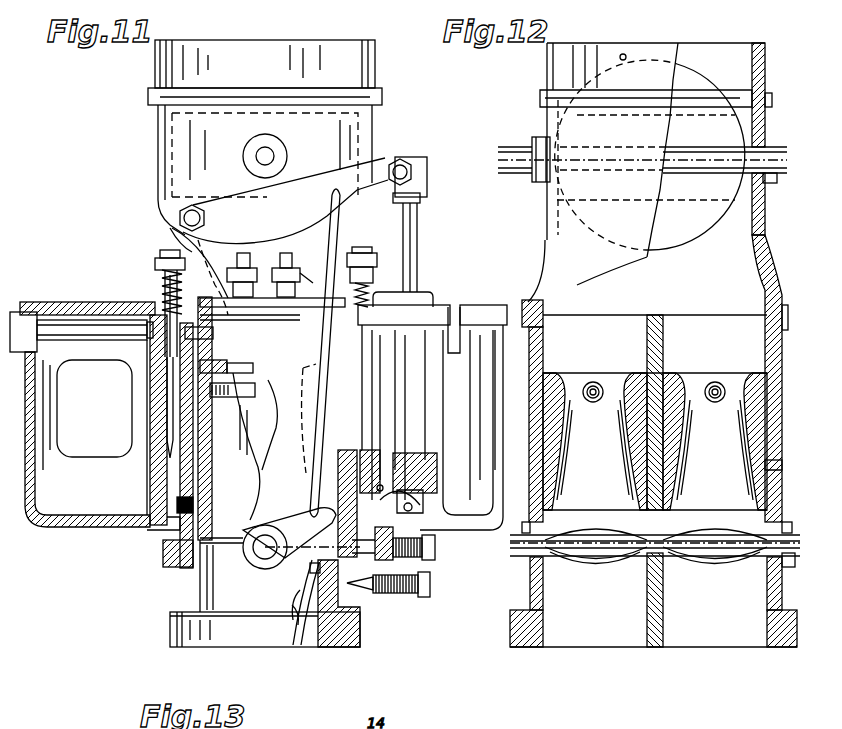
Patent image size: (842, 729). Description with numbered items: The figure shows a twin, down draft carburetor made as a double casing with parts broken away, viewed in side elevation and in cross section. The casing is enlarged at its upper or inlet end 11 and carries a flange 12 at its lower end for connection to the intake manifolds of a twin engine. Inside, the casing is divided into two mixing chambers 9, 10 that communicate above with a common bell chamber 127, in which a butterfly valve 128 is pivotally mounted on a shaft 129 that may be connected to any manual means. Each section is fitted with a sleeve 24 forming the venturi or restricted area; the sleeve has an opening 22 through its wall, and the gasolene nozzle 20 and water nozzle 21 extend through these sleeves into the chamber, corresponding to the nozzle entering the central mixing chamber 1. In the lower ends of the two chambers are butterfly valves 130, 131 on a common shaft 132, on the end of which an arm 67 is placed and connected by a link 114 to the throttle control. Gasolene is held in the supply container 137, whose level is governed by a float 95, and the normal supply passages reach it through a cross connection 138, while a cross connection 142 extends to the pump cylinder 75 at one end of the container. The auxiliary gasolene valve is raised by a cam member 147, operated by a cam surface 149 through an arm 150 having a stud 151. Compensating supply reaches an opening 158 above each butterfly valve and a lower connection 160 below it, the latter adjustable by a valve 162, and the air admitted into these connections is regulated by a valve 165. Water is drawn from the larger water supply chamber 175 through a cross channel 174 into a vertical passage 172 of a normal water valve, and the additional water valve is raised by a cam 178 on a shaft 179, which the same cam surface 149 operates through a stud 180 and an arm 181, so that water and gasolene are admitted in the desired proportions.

In FIG. 11, the mixing chamber 1 is at (307, 637).
In FIG. 11, the mixing chamber 9 is at (258, 462).
In FIG. 12, the mixing chamber 9 is at (595, 450).
In FIG. 12, the mixing chamber 10 is at (715, 450).
In FIG. 11, the enlarged upper or inlet end 11 is at (158, 160).
In FIG. 12, the enlarged upper or inlet end 11 is at (760, 262).
In FIG. 11, the flange 12 is at (170, 623).
In FIG. 12, the flange 12 is at (518, 632).
In FIG. 11, the gasolene nozzle 20 is at (278, 418).
In FIG. 11, the water nozzle 21 is at (256, 455).
In FIG. 12, the water nozzle 21 is at (598, 385).
In FIG. 11, the opening 22 is at (226, 376).
In FIG. 11, the sleeve 24 is at (277, 373).
In FIG. 12, the sleeve 24 is at (553, 383).
In FIG. 11, the arm 67 is at (295, 518).
In FIG. 11, the pump cylinder 75 is at (418, 350).
In FIG. 11, the float 95 is at (94, 408).
In FIG. 11, the link 114 is at (311, 476).
In FIG. 12, the bell chamber 127 is at (650, 273).
In FIG. 12, the butterfly valve 128 is at (693, 240).
In FIG. 11, the shaft 129 is at (271, 152).
In FIG. 12, the shaft 129 is at (508, 172).
In FIG. 12, the butterfly valve 130 is at (595, 565).
In FIG. 12, the butterfly valve 131 is at (725, 565).
In FIG. 11, the common shaft 132 is at (259, 564).
In FIG. 12, the common shaft 132 is at (513, 557).
In FIG. 11, the gasolene supply container 137 is at (470, 355).
In FIG. 11, the cross connection 138 is at (420, 505).
In FIG. 11, the cross connection 142 is at (390, 460).
In FIG. 11, the cam member 147 is at (382, 285).
In FIG. 11, the cam surface 149 is at (265, 237).
In FIG. 11, the arm 150 is at (312, 285).
In FIG. 11, the stud 151 is at (291, 262).
In FIG. 11, the opening 158 is at (297, 590).
In FIG. 11, the lower connection 160 is at (293, 612).
In FIG. 11, the valve 162 is at (421, 594).
In FIG. 11, the valve 165 is at (434, 559).
In FIG. 11, the vertical passage 172 is at (147, 458).
In FIG. 11, the cross channel 174 is at (165, 507).
In FIG. 11, the water supply chamber 175 is at (80, 512).
In FIG. 11, the cam 178 is at (160, 288).
In FIG. 11, the shaft 179 is at (175, 245).
In FIG. 11, the stud 180 is at (240, 262).
In FIG. 11, the arm 181 is at (226, 284).